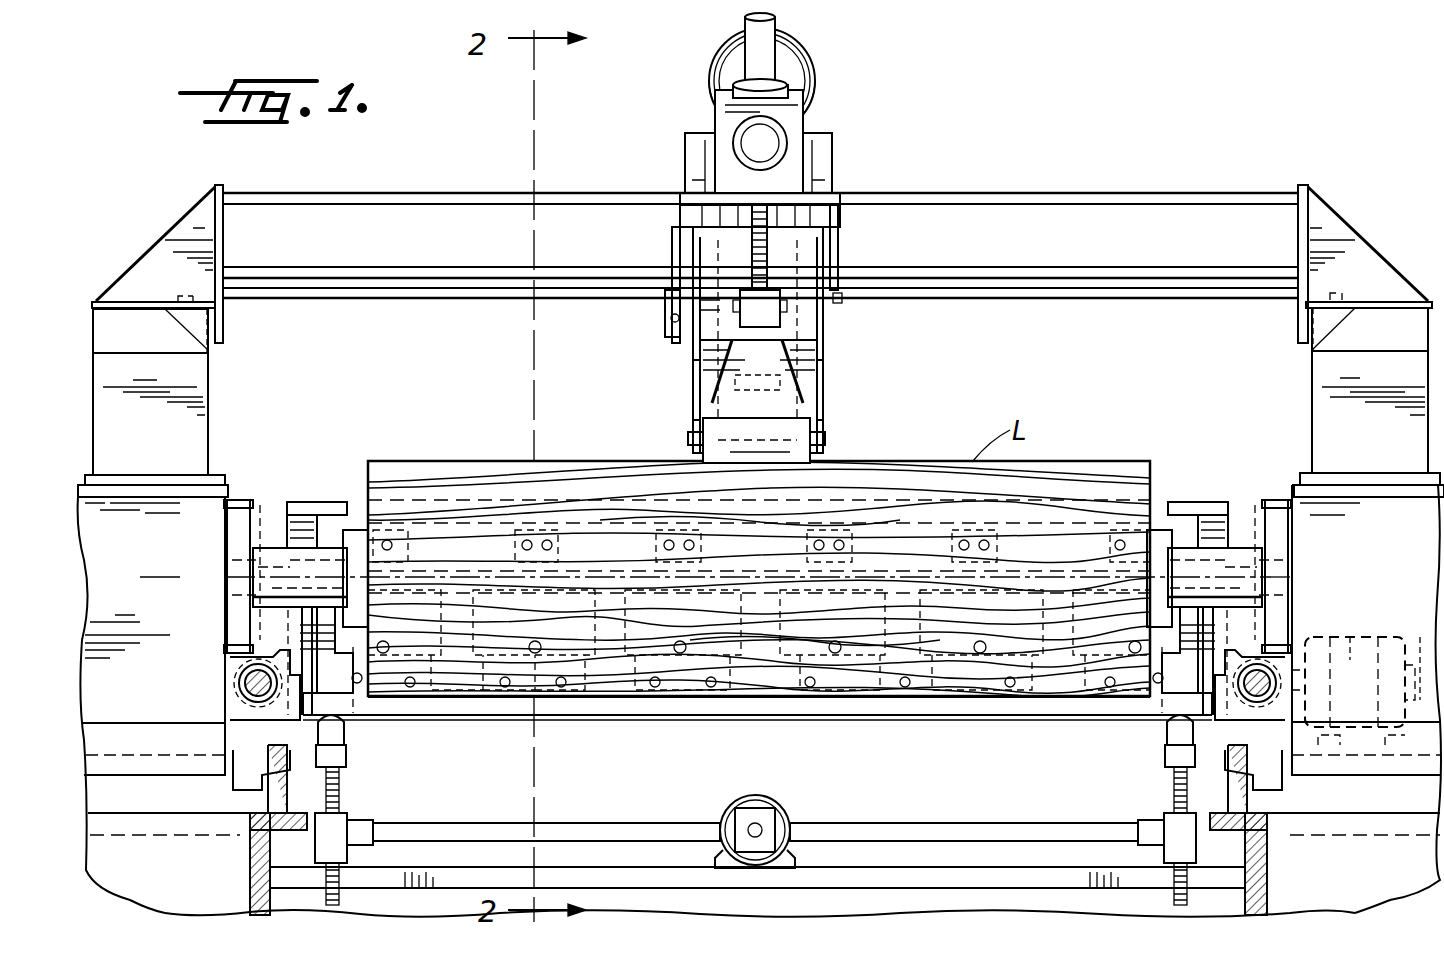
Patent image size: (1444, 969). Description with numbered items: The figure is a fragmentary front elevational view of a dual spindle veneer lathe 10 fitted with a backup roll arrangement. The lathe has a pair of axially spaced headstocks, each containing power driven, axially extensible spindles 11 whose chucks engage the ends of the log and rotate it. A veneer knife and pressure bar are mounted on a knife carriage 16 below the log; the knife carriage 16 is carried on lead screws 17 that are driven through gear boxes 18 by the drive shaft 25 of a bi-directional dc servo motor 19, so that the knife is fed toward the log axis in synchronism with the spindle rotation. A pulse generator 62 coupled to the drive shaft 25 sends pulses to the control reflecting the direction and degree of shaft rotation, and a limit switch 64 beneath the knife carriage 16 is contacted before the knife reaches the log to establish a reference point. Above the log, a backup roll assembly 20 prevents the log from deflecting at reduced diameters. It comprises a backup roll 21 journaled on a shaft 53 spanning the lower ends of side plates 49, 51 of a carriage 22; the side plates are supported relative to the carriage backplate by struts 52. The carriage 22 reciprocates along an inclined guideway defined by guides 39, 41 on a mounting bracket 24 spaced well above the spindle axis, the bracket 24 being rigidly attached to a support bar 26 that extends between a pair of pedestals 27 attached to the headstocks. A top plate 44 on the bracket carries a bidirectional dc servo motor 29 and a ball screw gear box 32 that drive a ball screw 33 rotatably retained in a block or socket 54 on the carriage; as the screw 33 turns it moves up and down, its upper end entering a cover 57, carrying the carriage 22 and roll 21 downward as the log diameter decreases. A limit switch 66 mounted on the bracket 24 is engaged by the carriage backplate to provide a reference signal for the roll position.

The dual spindle veneer lathe 10 is at (1222, 150).
The spindles 11 is at (345, 540).
The knife carriage 16 is at (620, 722).
The lead screws 17 is at (256, 695).
The gear boxes 18 is at (268, 668).
The bi-directional dc servo motor 19 is at (1350, 640).
The backup roll assembly 20 is at (655, 355).
The backup roll 21 is at (793, 458).
The backup roll carriage 22 is at (835, 330).
The mounting bracket 24 is at (845, 188).
The drive shaft 25 is at (1353, 691).
The support bar 26 is at (985, 196).
The pedestals 27 is at (208, 402).
The bidirectional dc servo motor 29 is at (720, 62).
The ball screw gear box 32 is at (800, 118).
The ball screw 33 is at (752, 245).
The guide 39 is at (790, 400).
The guide 41 is at (720, 405).
The top plate 44 is at (822, 150).
The side plate 49 is at (820, 378).
The side plate 51 is at (708, 393).
The struts 52 is at (795, 385).
The shaft 53 is at (690, 440).
The block or socket 54 is at (765, 305).
The cover 57 is at (782, 40).
The pulse generator 62 is at (1425, 660).
The limit switch 64 is at (1176, 776).
The limit switch 66 is at (665, 312).